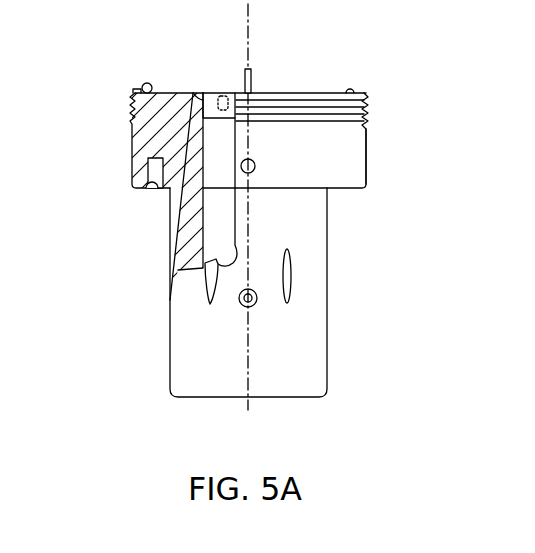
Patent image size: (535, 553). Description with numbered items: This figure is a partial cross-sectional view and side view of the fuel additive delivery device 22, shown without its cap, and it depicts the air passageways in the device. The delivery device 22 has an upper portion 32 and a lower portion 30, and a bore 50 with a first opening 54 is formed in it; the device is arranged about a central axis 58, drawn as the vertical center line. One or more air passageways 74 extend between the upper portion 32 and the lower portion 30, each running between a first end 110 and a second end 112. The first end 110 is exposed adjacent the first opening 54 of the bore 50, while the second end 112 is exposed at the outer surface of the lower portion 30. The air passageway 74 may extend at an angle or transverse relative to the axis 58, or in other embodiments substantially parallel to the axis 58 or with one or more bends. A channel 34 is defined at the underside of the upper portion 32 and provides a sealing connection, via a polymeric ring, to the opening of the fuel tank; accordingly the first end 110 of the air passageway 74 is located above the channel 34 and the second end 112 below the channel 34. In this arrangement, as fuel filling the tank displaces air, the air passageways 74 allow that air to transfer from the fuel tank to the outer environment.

The fuel additive delivery device 22 is at (361, 64).
The lower portion 30 is at (338, 276).
The upper portion 32 is at (378, 148).
The channel 34 is at (152, 187).
The bore 50 is at (226, 78).
The first opening 54 is at (193, 93).
The axis 58 is at (252, 15).
The air passageway 74 is at (176, 141).
The first end 110 is at (138, 97).
The second end 112 is at (172, 261).